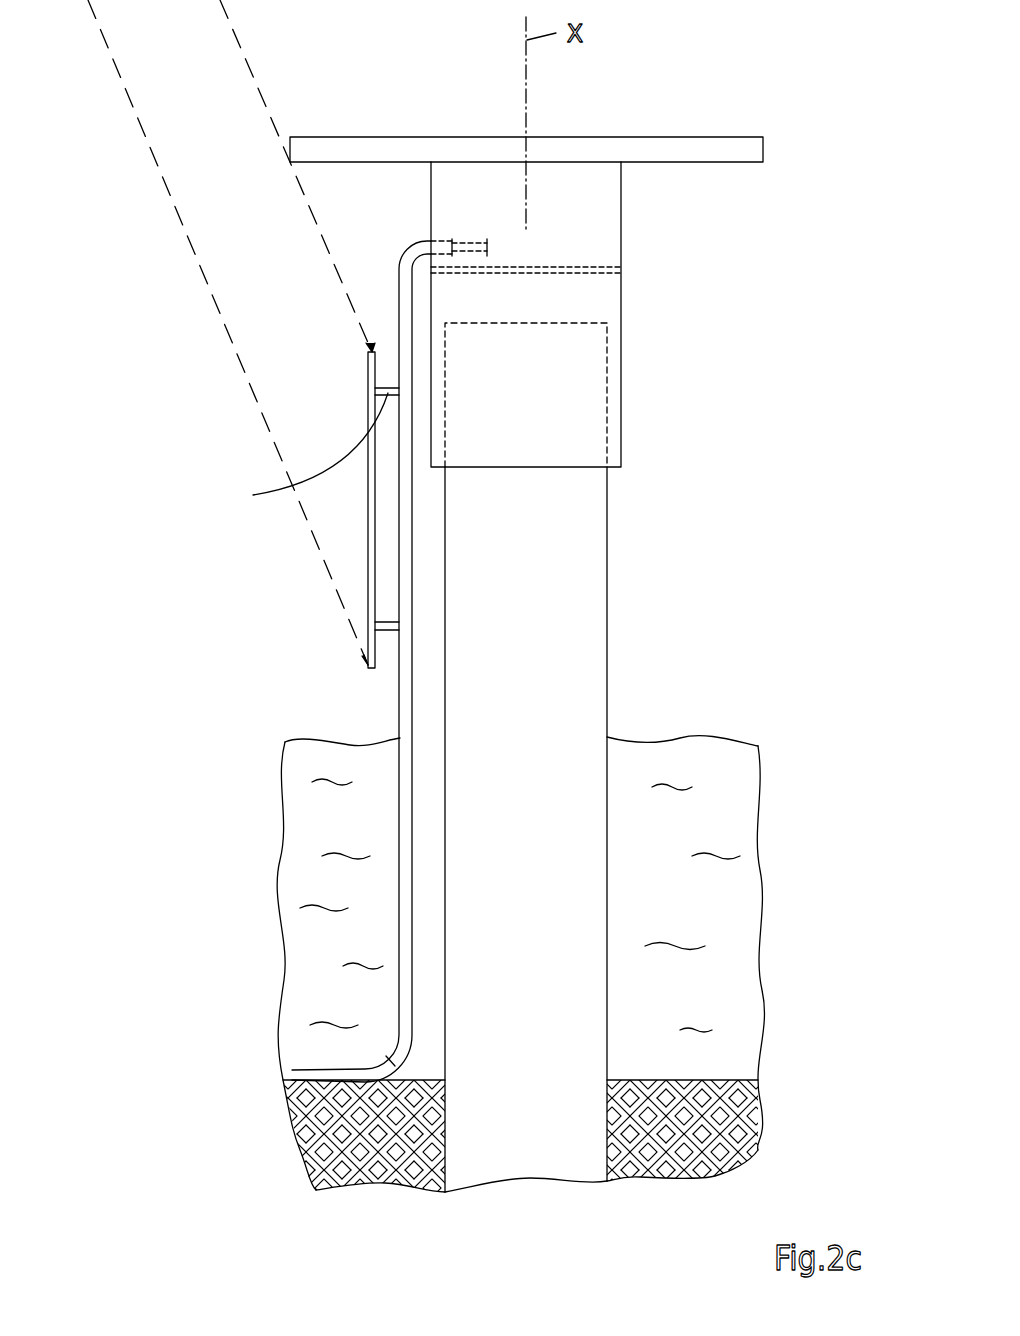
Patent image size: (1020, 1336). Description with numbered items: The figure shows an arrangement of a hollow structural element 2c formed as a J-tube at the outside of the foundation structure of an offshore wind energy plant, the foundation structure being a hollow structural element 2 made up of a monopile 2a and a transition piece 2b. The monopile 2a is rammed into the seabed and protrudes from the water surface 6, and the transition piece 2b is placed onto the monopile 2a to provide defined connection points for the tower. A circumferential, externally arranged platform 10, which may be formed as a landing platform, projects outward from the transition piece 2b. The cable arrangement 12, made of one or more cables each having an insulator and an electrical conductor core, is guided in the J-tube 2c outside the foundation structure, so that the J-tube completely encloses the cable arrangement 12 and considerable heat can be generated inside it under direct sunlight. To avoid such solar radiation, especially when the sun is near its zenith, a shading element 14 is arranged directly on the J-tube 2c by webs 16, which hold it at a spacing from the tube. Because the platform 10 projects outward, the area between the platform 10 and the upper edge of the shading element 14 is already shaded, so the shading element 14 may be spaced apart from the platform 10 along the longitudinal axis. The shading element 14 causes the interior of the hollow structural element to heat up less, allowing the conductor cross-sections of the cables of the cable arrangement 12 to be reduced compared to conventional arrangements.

The hollow structural element 2 is at (622, 677).
The monopile 2a is at (608, 552).
The transition piece 2b is at (623, 236).
The hollow structural element formed as a J-tube 2c is at (405, 692).
The water surface 6 is at (705, 735).
The platform 10 is at (683, 150).
The cable arrangement 12 is at (468, 243).
The shading element 14 is at (372, 505).
The webs 16 is at (305, 455).